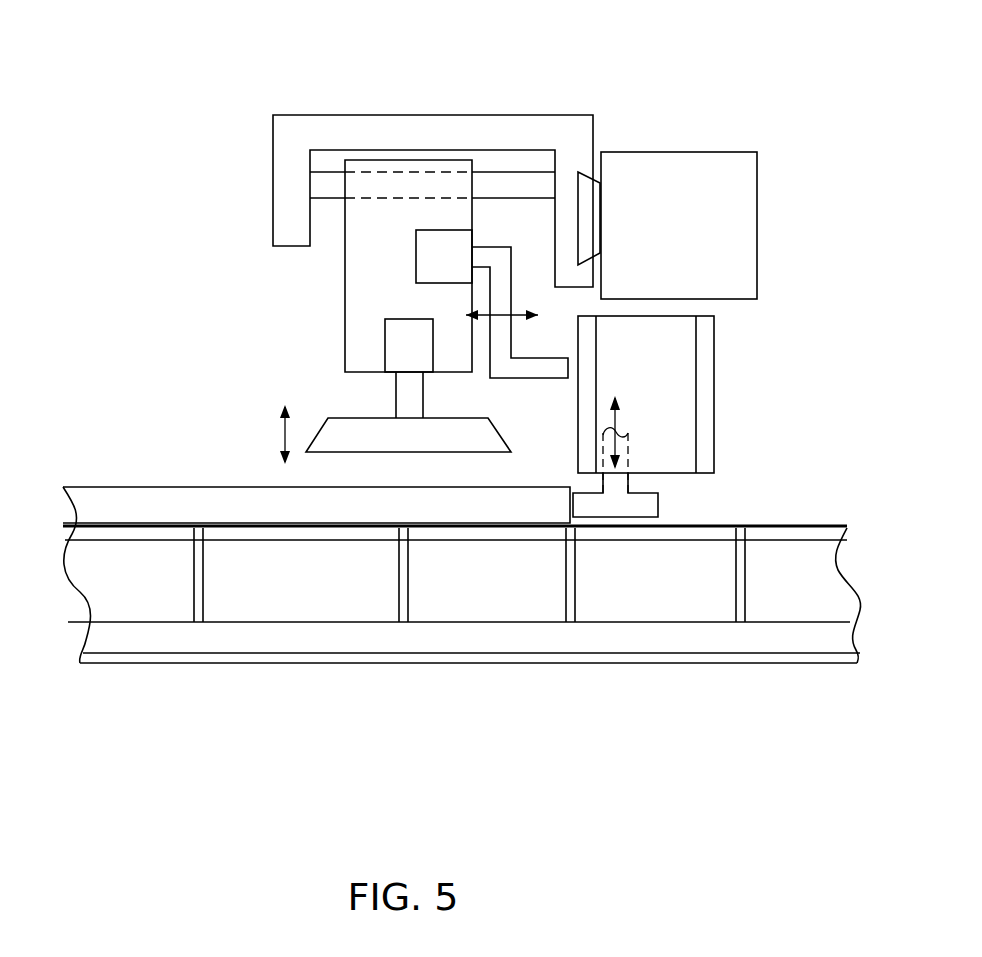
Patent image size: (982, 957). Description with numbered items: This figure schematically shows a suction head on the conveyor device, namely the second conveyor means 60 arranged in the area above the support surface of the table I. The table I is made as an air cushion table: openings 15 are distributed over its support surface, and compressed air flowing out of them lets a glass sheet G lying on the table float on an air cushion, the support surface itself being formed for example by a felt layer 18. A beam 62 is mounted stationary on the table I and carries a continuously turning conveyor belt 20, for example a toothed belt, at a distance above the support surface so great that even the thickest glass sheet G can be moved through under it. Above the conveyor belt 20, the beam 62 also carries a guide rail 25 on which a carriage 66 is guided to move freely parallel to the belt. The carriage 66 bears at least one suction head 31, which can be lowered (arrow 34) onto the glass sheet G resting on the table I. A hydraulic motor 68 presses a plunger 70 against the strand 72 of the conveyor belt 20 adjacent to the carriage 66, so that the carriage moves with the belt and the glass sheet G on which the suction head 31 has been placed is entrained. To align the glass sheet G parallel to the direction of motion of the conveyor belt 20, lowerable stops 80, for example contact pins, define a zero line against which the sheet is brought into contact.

The second conveyor means 60 is at (350, 97).
The carriage 66 is at (463, 140).
The hydraulic motor 68 is at (450, 252).
The plunger 70 is at (528, 370).
The guide rail 25 is at (588, 225).
The beam 62 is at (700, 218).
The suction head 31 is at (445, 437).
The arrow 34 is at (282, 428).
The conveyor belt 20 is at (706, 445).
The strand 72 is at (588, 389).
The lowerable stops 80 is at (640, 506).
The glass sheet G is at (128, 508).
The felt layer 18 is at (178, 533).
The openings 15 is at (202, 593).
The table I is at (93, 677).